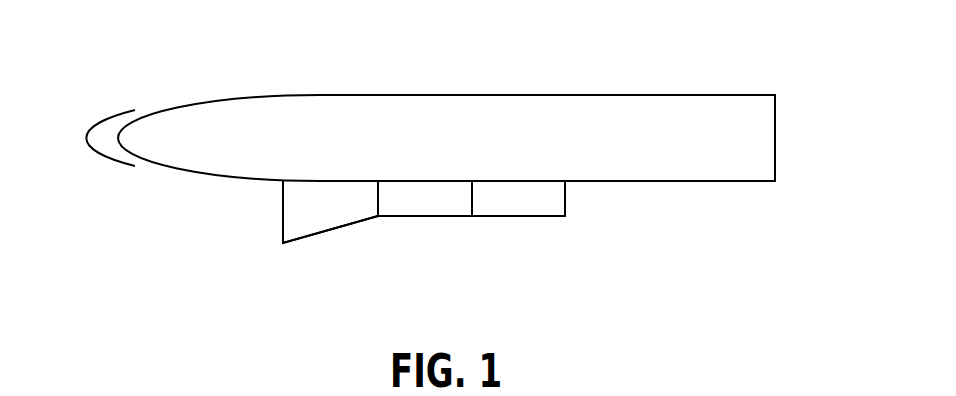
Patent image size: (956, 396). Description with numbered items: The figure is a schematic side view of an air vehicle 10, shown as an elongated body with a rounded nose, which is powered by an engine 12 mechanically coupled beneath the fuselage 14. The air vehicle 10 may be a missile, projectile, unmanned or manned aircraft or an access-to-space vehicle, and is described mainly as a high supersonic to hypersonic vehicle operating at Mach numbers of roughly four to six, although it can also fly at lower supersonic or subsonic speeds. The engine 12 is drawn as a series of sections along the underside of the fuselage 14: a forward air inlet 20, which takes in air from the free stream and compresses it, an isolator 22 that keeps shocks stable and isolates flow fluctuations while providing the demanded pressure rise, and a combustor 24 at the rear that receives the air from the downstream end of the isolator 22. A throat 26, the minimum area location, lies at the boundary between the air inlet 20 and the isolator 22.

The air vehicle 10 is at (138, 76).
The engine 12 is at (256, 260).
The fuselage 14 is at (173, 152).
The air inlet 20 is at (333, 203).
The isolator 22 is at (430, 203).
The combustor 24 is at (522, 203).
The throat 26 is at (378, 194).